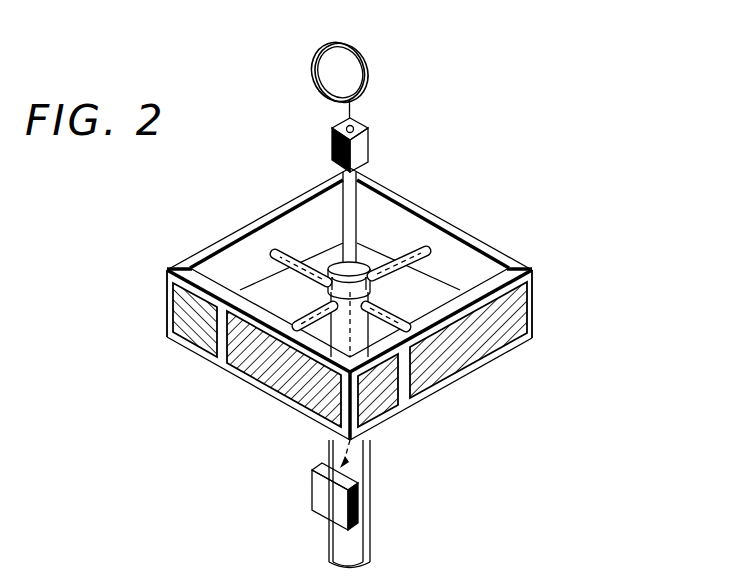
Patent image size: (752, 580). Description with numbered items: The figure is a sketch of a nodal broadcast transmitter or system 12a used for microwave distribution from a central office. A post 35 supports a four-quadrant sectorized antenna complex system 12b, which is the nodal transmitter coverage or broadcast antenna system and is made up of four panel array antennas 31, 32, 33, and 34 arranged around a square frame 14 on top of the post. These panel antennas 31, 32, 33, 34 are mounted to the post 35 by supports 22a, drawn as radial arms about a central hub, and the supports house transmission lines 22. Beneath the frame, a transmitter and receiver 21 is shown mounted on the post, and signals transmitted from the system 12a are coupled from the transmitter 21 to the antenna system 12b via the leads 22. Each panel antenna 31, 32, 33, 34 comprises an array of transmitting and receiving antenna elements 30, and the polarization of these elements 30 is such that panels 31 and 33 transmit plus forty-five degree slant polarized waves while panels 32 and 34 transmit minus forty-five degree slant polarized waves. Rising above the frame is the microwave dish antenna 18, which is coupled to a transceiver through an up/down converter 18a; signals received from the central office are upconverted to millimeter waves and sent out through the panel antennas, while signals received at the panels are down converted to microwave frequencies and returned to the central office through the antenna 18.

The nodal broadcast transmitter system 12a is at (553, 129).
The four-quadrant sectorized antenna complex system 12b is at (166, 282).
The frame 14 is at (190, 284).
The microwave antenna 18 is at (349, 45).
The up/down converter 18a is at (369, 147).
The transmitter and receiver 21 is at (318, 508).
The leads 22 is at (300, 268).
The supports 22a is at (398, 262).
The antenna elements 30 is at (237, 363).
The panel array antenna 31 is at (273, 398).
The panel array antenna 32 is at (306, 194).
The panel array antenna 33 is at (402, 197).
The panel array antenna 34 is at (452, 384).
The post 35 is at (366, 533).